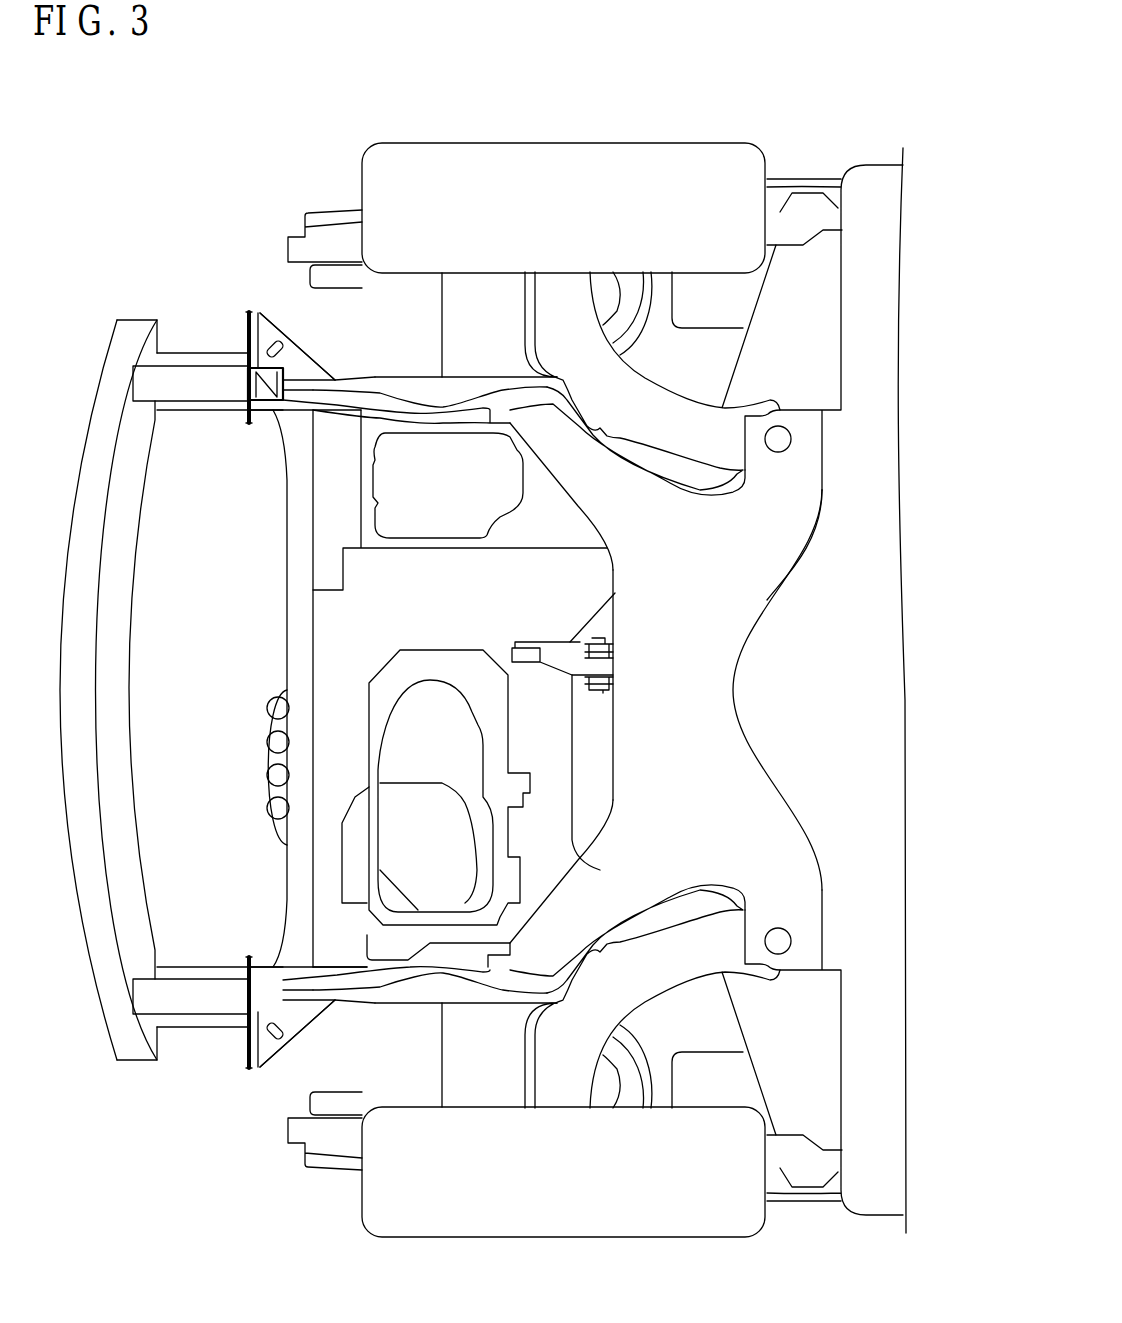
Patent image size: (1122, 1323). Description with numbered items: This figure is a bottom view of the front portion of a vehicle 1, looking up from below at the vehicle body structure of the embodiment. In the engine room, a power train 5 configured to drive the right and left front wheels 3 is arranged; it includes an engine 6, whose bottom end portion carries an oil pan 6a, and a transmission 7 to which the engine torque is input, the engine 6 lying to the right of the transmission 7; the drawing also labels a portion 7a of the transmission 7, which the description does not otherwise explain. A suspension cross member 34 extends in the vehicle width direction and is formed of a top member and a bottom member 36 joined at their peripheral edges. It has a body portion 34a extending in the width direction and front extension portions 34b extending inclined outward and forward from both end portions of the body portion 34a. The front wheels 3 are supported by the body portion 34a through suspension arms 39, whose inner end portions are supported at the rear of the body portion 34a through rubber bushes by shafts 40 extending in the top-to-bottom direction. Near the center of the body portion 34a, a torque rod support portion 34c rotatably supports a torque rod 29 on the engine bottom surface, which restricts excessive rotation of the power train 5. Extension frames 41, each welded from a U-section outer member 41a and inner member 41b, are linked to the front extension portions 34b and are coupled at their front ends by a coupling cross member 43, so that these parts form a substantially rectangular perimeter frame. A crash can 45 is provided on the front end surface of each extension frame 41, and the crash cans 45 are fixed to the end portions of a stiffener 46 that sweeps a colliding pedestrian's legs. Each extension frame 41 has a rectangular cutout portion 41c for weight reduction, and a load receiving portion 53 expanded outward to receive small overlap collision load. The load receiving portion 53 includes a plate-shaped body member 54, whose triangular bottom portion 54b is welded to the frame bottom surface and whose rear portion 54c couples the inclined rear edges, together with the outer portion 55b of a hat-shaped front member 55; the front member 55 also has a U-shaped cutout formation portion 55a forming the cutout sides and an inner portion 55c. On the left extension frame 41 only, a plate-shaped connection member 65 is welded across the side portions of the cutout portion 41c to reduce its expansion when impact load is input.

The vehicle 1 is at (325, 165).
The front wheels 3 is at (655, 158).
The power train 5 is at (225, 530).
The engine 6 is at (335, 637).
The oil pan 6a is at (432, 665).
The transmission 7 is at (350, 522).
The gear housing opening 7a is at (407, 520).
The torque rod 29 is at (560, 645).
The suspension cross member 34 is at (834, 497).
The body portion 34a is at (755, 570).
The front extension portions 34b is at (562, 462).
The torque rod support portion 34c is at (599, 709).
The bottom member 36 is at (705, 706).
The suspension arms 39 is at (678, 410).
The shafts 40 is at (790, 440).
The extension frames 41 is at (385, 205).
The outer member 41a is at (377, 398).
The inner member 41b is at (470, 417).
The cutout portion 41c is at (250, 360).
The coupling cross member 43 is at (300, 846).
The crash can 45 is at (175, 366).
The stiffener 46 is at (115, 370).
The load receiving portion 53 is at (268, 296).
The body member 54 is at (279, 303).
The bottom portion 54b is at (300, 362).
The rear portion 54c is at (290, 330).
The front member 55 is at (246, 325).
The cutout formation portion 55a is at (267, 412).
The outer portion 55b is at (249, 322).
The inner portion 55c is at (250, 428).
The connection member 65 is at (247, 385).